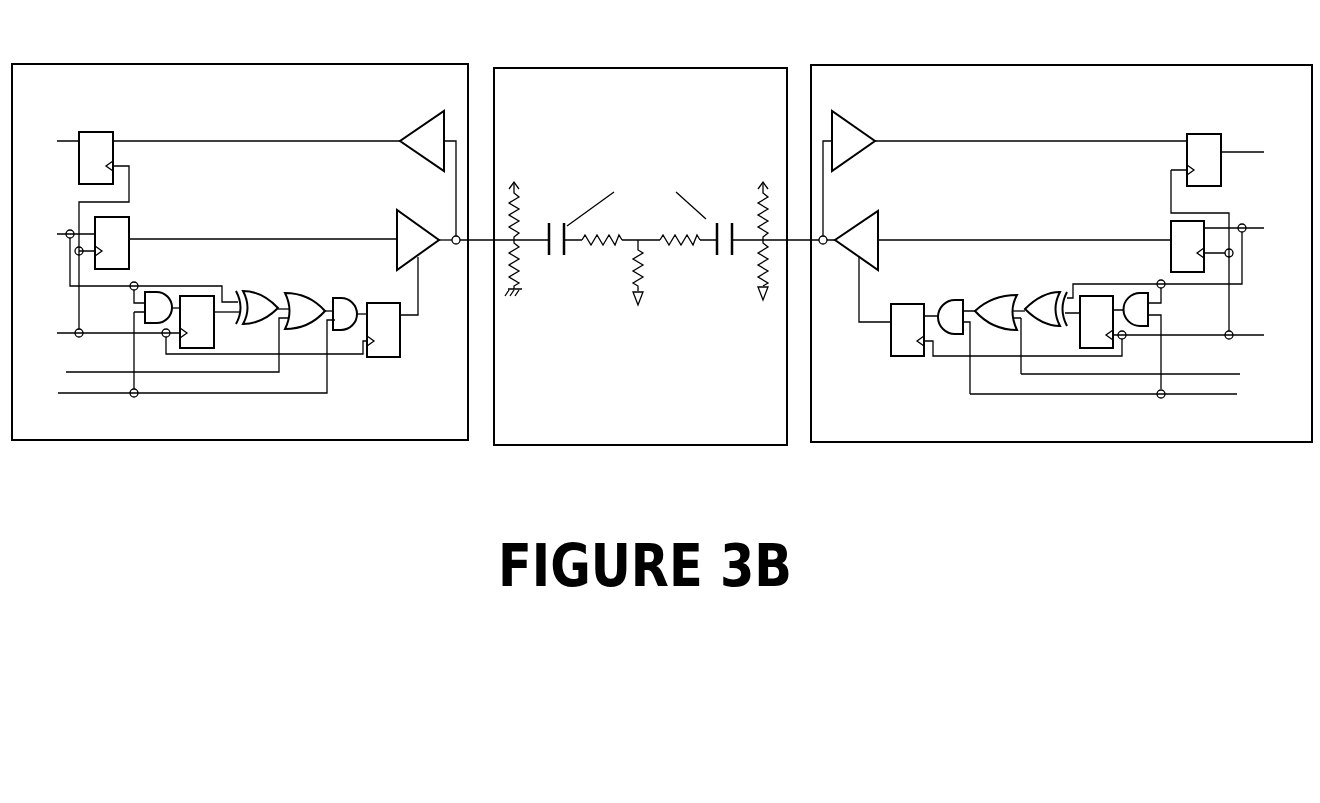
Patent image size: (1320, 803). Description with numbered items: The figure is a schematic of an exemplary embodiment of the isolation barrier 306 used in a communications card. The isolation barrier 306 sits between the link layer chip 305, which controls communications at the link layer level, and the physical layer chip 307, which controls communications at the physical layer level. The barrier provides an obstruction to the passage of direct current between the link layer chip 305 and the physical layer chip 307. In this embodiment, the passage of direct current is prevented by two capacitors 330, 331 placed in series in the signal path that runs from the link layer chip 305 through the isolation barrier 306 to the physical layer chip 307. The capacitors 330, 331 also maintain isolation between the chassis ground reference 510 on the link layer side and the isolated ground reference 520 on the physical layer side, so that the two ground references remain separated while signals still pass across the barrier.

The link layer chip 305 is at (96, 60).
The isolation barrier 306 is at (582, 60).
The physical layer chip 307 is at (882, 60).
The capacitor 330 is at (565, 224).
The capacitor 331 is at (708, 219).
The chassis ground reference 510 is at (519, 298).
The isolated ground reference 520 is at (762, 306).